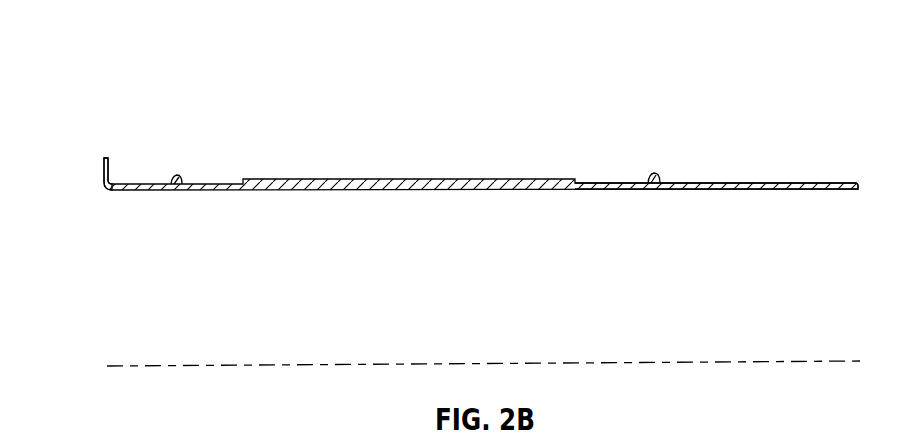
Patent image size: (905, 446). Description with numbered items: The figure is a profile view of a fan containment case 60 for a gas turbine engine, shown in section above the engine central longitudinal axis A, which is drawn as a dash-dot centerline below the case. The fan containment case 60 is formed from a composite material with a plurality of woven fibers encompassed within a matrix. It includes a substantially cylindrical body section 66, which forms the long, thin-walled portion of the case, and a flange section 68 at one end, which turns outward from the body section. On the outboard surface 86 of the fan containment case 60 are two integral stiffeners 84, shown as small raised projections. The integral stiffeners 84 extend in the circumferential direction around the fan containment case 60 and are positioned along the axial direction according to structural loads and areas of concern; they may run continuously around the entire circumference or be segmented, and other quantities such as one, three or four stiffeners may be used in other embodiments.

The fan containment case 60 is at (448, 116).
The cylindrical body section 66 is at (503, 180).
The flange section 68 is at (102, 173).
The integral stiffener 84 is at (176, 177).
The outboard surface 86 is at (692, 181).
The engine central longitudinal axis A is at (583, 358).